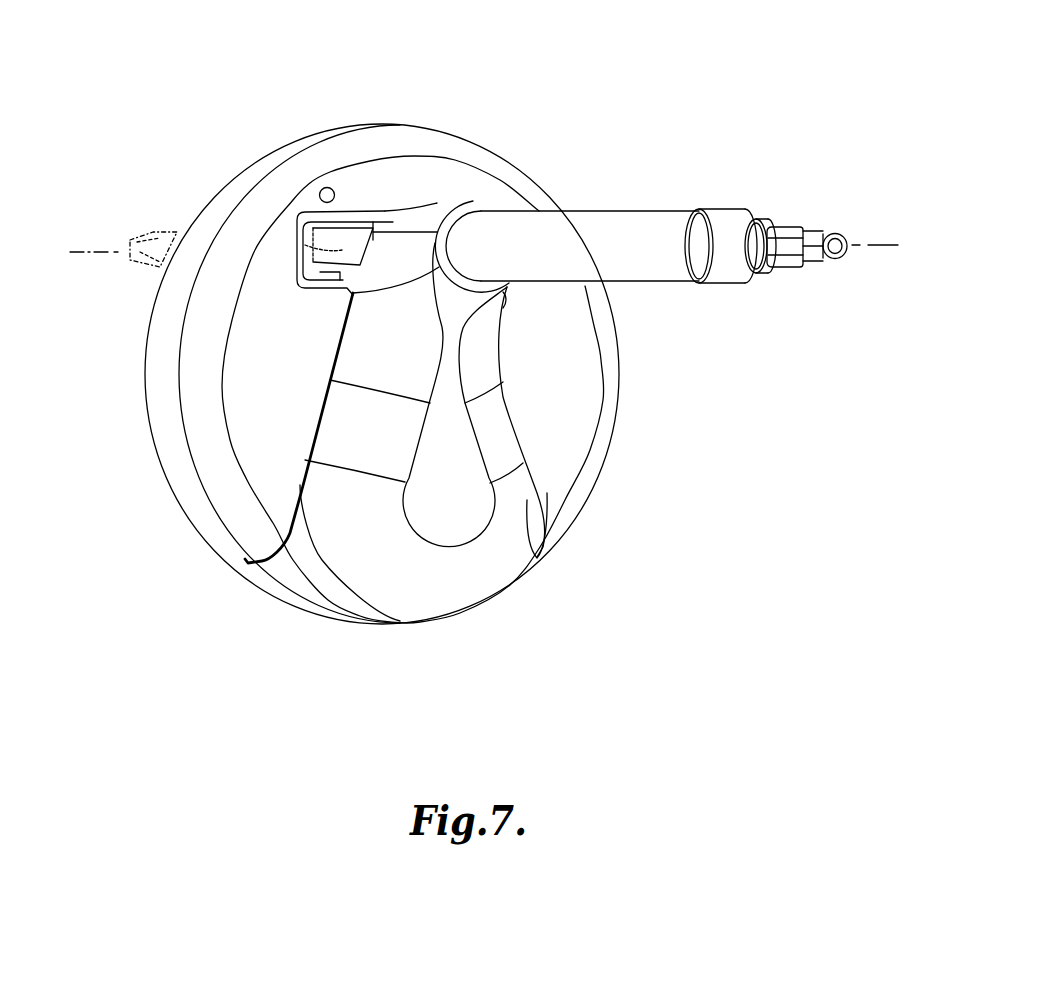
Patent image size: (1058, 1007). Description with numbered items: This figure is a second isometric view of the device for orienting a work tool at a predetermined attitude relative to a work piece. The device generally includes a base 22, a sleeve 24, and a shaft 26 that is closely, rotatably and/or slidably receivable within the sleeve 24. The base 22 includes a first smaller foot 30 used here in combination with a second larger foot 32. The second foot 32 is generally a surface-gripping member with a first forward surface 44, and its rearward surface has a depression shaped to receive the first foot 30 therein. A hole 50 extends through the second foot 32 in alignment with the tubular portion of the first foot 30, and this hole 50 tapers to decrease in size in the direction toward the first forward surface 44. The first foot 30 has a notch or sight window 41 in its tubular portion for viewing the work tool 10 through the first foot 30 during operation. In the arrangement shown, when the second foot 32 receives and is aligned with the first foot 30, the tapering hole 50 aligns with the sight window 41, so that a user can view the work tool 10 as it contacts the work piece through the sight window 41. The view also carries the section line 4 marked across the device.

The section line 4- 4 is at (118, 233).
The work tool 10 is at (340, 245).
The base 22 is at (505, 146).
The sleeve 24 is at (598, 212).
The shaft 26 is at (744, 217).
The first foot 30 is at (460, 612).
The second foot 32 is at (588, 506).
The sight window 41 is at (400, 234).
The first forward surface 44 is at (143, 363).
The hole 50 is at (307, 222).